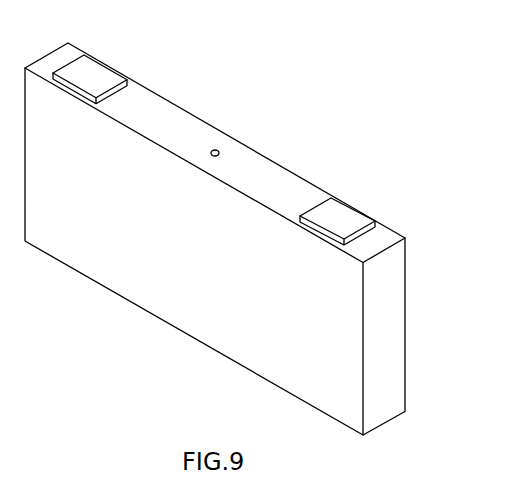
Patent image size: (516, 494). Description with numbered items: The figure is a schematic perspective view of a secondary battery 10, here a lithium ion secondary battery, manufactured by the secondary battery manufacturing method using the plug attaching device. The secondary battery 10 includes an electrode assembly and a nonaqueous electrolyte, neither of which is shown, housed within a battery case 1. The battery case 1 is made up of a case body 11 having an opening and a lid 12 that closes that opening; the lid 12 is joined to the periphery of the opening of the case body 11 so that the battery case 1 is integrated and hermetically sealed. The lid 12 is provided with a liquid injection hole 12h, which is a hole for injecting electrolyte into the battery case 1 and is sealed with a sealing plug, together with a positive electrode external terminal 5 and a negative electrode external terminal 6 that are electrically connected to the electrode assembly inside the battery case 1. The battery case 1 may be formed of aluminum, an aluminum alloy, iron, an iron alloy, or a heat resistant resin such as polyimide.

The secondary battery 10 is at (433, 38).
The battery case 1 is at (418, 278).
The case body 11 is at (115, 272).
The lid 12 is at (272, 168).
The liquid injection hole 12h is at (217, 147).
The positive electrode external terminal 5 is at (93, 73).
The negative electrode external terminal 6 is at (340, 213).